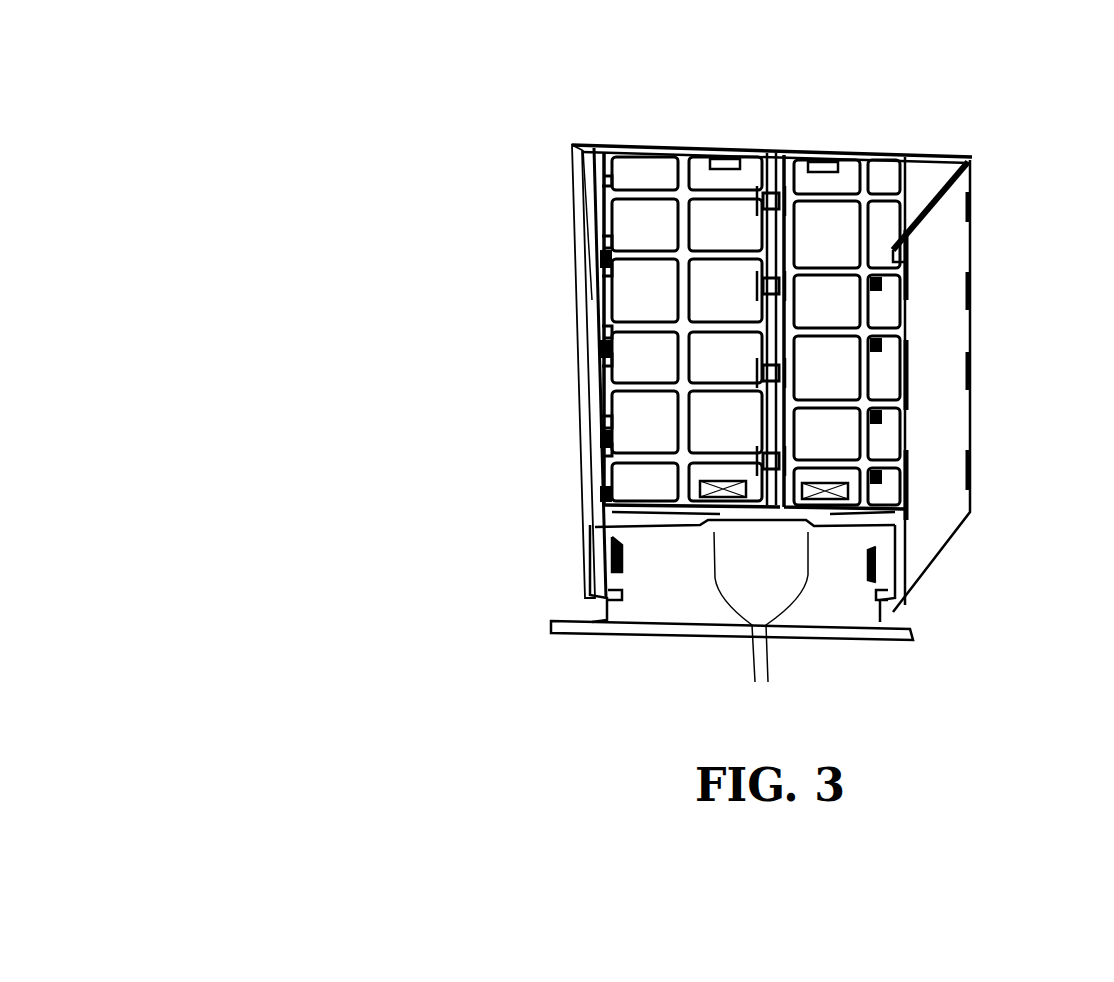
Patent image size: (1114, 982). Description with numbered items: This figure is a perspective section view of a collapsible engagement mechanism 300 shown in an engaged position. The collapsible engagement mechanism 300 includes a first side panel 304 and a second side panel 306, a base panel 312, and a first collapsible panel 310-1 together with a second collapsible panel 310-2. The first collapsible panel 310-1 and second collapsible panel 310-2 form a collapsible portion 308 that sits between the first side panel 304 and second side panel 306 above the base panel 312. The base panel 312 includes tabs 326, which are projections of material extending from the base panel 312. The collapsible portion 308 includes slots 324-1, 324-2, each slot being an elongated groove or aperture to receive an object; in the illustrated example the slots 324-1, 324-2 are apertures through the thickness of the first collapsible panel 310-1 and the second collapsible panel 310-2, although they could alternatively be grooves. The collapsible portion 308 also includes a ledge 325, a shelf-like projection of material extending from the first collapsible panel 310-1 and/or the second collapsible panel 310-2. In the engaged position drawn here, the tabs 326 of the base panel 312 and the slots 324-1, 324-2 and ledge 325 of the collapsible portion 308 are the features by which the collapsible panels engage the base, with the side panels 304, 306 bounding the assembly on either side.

The collapsible engagement mechanism 300 is at (362, 148).
The collapsible portion 308 is at (964, 68).
The first collapsible panel 310-1 is at (668, 150).
The second collapsible panel 310-2 is at (896, 152).
The first side panel 304 is at (598, 277).
The second side panel 306 is at (937, 380).
The slot 324-1 is at (690, 492).
The slot 324-2 is at (870, 492).
The ledge 325 is at (740, 500).
The tabs 326 is at (761, 621).
The base panel 312 is at (855, 620).